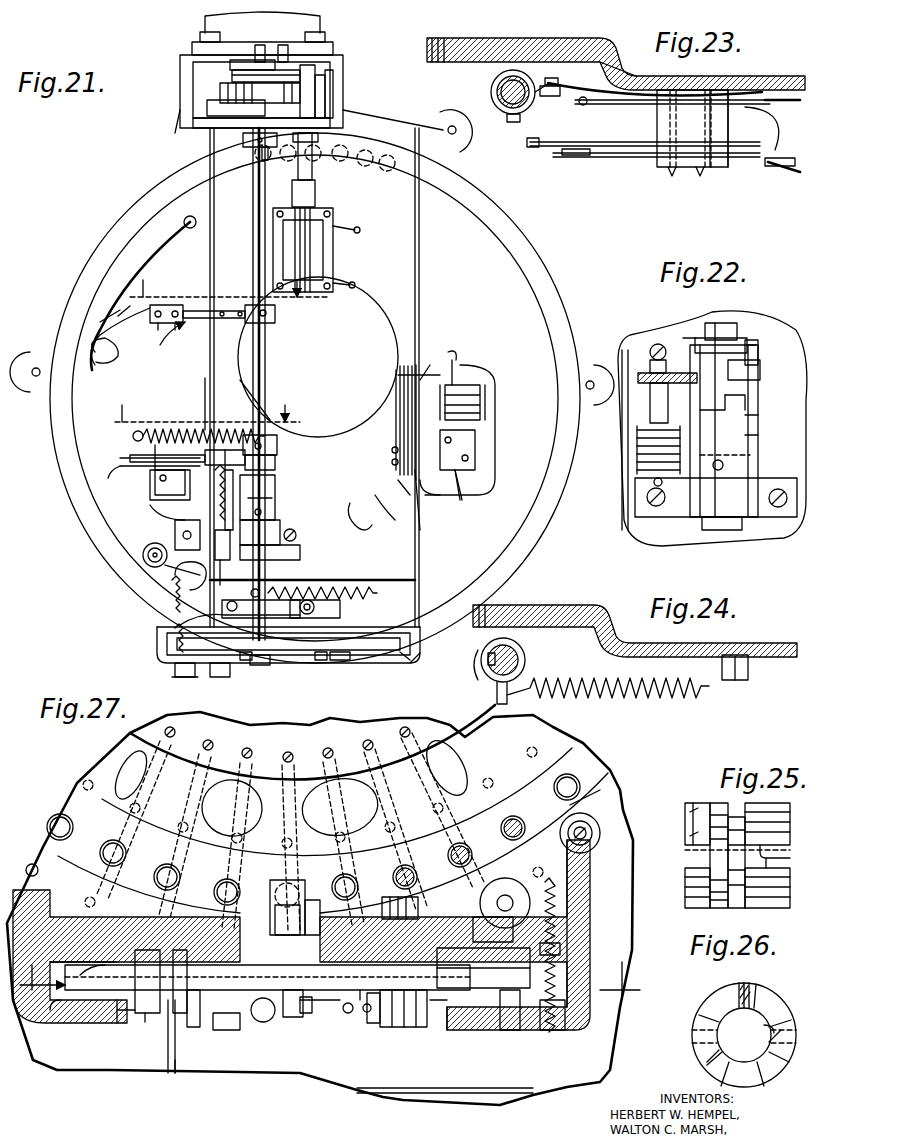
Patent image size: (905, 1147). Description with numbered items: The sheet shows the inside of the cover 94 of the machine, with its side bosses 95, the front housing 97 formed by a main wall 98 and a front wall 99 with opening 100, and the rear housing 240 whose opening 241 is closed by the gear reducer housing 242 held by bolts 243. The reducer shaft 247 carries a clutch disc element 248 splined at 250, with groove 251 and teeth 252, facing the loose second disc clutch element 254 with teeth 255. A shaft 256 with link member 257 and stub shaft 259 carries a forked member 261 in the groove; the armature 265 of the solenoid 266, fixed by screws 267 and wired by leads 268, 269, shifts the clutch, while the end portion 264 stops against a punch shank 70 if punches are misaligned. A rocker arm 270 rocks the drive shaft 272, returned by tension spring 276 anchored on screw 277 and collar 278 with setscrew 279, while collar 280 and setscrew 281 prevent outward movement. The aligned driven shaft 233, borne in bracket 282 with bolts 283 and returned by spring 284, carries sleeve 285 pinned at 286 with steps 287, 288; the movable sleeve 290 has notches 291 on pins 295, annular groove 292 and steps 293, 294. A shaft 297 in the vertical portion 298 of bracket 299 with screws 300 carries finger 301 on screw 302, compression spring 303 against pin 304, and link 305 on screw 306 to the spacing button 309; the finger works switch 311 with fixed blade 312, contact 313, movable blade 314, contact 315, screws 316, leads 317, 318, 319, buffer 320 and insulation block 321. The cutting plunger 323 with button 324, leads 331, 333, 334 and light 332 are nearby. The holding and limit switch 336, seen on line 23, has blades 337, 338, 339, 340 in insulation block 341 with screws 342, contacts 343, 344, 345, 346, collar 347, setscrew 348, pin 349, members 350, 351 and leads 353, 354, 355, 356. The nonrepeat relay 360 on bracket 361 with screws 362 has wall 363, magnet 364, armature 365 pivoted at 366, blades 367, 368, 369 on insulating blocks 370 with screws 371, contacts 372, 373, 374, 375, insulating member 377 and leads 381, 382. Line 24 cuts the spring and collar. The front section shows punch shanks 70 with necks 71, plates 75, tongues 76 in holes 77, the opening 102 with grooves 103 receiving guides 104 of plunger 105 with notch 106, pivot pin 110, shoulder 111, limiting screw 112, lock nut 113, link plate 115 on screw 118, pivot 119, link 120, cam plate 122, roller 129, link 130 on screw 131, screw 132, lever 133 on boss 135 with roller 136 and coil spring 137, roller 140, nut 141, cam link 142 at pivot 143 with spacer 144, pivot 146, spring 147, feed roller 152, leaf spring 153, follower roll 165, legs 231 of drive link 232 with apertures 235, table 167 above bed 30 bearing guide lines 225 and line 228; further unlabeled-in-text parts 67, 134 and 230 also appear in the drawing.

In FIG. 21, the section line 23- 23 is at (230, 294).
In FIG. 21, the section line 24- 24 is at (204, 410).
In FIG. 27, the bed 30 is at (78, 1105).
In FIG. 27, the rotary table 67 is at (160, 724).
In FIG. 21, the punch shank 70 is at (387, 156).
In FIG. 27, the punch shank 70 is at (50, 822).
In FIG. 27, the plunger-receiving neck 71 is at (460, 844).
In FIG. 27, the punch-supporting plate 75 is at (115, 762).
In FIG. 27, the tongue 76 is at (170, 726).
In FIG. 27, the hole 77 is at (207, 740).
In FIG. 21, the cover 94 is at (100, 222).
In FIG. 23, the cover 94 is at (762, 74).
In FIG. 22, the cover 94 is at (790, 540).
In FIG. 24, the cover 94 is at (580, 606).
In FIG. 27, the cover 94 is at (14, 885).
In FIG. 21, the bosses 95 is at (28, 355).
In FIG. 27, the housing 97 is at (590, 935).
In FIG. 21, the main wall 98 is at (418, 605).
In FIG. 27, the main wall 98 is at (60, 915).
In FIG. 21, the front wall 99 is at (420, 665).
In FIG. 27, the front wall 99 is at (85, 1023).
In FIG. 21, the opening 100 is at (405, 664).
In FIG. 27, the opening 100 is at (130, 1025).
In FIG. 27, the opening 102 is at (232, 875).
In FIG. 27, the vertical grooves 103 is at (170, 862).
In FIG. 27, the guides 104 is at (288, 920).
In FIG. 27, the punch actuating plunger 105 is at (345, 875).
In FIG. 27, the notch 106 is at (287, 900).
In FIG. 27, the pivot pin 110 is at (292, 1018).
In FIG. 27, the spacing shoulder 111 is at (317, 915).
In FIG. 21, the limiting screw 112 is at (258, 590).
In FIG. 21, the lock nut 113 is at (315, 607).
In FIG. 21, the link plate 115 is at (341, 612).
In FIG. 27, the link plate 115 is at (127, 914).
In FIG. 27, the screw 118 is at (180, 1014).
In FIG. 27, the pivot 119 is at (226, 1031).
In FIG. 27, the link 120 is at (365, 1013).
In FIG. 21, the combination link and cam plate 122 is at (180, 622).
In FIG. 27, the combination link and cam plate 122 is at (470, 988).
In FIG. 27, the roller 129 is at (508, 1031).
In FIG. 27, the link 130 is at (478, 920).
In FIG. 27, the screw 131 is at (550, 1031).
In FIG. 27, the screw 132 is at (562, 950).
In FIG. 21, the horizontal lever 133 is at (178, 580).
In FIG. 27, the cam 134 is at (485, 892).
In FIG. 27, the boss 135 is at (595, 818).
In FIG. 21, the roller 136 is at (145, 562).
In FIG. 21, the coil spring 137 is at (175, 640).
In FIG. 27, the coil spring 137 is at (565, 905).
In FIG. 27, the roller 140 is at (177, 1074).
In FIG. 27, the nut 141 is at (195, 1028).
In FIG. 27, the cam link 142 is at (112, 1024).
In FIG. 27, the pivot 143 is at (146, 1022).
In FIG. 21, the spacer member 144 is at (335, 661).
In FIG. 27, the spacer member 144 is at (135, 1000).
In FIG. 27, the pivot 146 is at (312, 1002).
In FIG. 27, the tension spring 147 is at (263, 1023).
In FIG. 27, the feed roller 152 is at (150, 980).
In FIG. 27, the leaf spring 153 is at (92, 970).
In FIG. 27, the follower roll 165 is at (346, 1014).
In FIG. 27, the table 167 is at (45, 1050).
In FIG. 27, the guide lines 225 is at (390, 1094).
In FIG. 27, the line 228 is at (168, 1070).
In FIG. 21, the bar 230 is at (292, 652).
In FIG. 21, the legs 231 is at (246, 661).
In FIG. 27, the legs 231 is at (362, 1002).
In FIG. 27, the drive link 232 is at (438, 1002).
In FIG. 22, the driven shaft 233 is at (715, 531).
In FIG. 27, the driven shaft 233 is at (400, 895).
In FIG. 27, the apertures 235 is at (374, 1024).
In FIG. 21, the second housing 240 is at (178, 60).
In FIG. 21, the housing opening 241 is at (334, 50).
In FIG. 21, the gear reducer housing 242 is at (322, 20).
In FIG. 21, the bolts 243 is at (326, 38).
In FIG. 21, the shaft 247 is at (262, 46).
In FIG. 21, the clutch disc element 248 is at (230, 64).
In FIG. 21, the spline 250 is at (232, 80).
In FIG. 21, the circumferential groove 251 is at (232, 75).
In FIG. 21, the teeth 252 is at (326, 88).
In FIG. 21, the second disc clutch element 254 is at (207, 105).
In FIG. 21, the teeth 255 is at (260, 93).
In FIG. 21, the shaft 256 is at (313, 172).
In FIG. 21, the link member 257 is at (316, 75).
In FIG. 21, the stub shaft 259 is at (334, 105).
In FIG. 21, the forked member 261 is at (283, 46).
In FIG. 21, the end portion 264 is at (319, 138).
In FIG. 21, the armature 265 is at (316, 195).
In FIG. 21, the solenoid 266 is at (340, 248).
In FIG. 21, the screws 267 is at (276, 214).
In FIG. 21, the electrical lead 268 is at (360, 230).
In FIG. 21, the electrical lead 269 is at (356, 285).
In FIG. 21, the rocker arm 270 is at (193, 122).
In FIG. 21, the drive shaft 272 is at (266, 355).
In FIG. 23, the drive shaft 272 is at (505, 80).
In FIG. 22, the drive shaft 272 is at (740, 330).
In FIG. 24, the drive shaft 272 is at (515, 654).
In FIG. 21, the tension spring 276 is at (185, 430).
In FIG. 24, the tension spring 276 is at (690, 682).
In FIG. 21, the screw 277 is at (132, 438).
In FIG. 24, the screw 277 is at (745, 680).
In FIG. 21, the collar 278 is at (278, 448).
In FIG. 22, the collar 278 is at (722, 336).
In FIG. 24, the collar 278 is at (527, 662).
In FIG. 21, the setscrew 279 is at (262, 446).
In FIG. 24, the setscrew 279 is at (486, 658).
In FIG. 21, the collar 280 is at (245, 146).
In FIG. 21, the setscrew 281 is at (262, 155).
In FIG. 21, the bracket 282 is at (301, 552).
In FIG. 22, the bracket 282 is at (690, 518).
In FIG. 21, the bolts 283 is at (297, 535).
In FIG. 22, the bolts 283 is at (640, 510).
In FIG. 21, the tension spring 284 is at (332, 590).
In FIG. 21, the sleeve 285 is at (281, 525).
In FIG. 22, the sleeve 285 is at (756, 470).
In FIG. 21, the pin 286 is at (262, 510).
In FIG. 22, the pin 286 is at (718, 470).
In FIG. 22, the step 287 is at (722, 412).
In FIG. 22, the step 288 is at (758, 416).
In FIG. 21, the sleeve 290 is at (276, 485).
In FIG. 22, the sleeve 290 is at (760, 375).
In FIG. 25, the sleeve 290 is at (719, 802).
In FIG. 26, the sleeve 290 is at (701, 1008).
In FIG. 22, the notches 291 is at (706, 332).
In FIG. 25, the notches 291 is at (745, 862).
In FIG. 26, the notches 291 is at (764, 1027).
In FIG. 22, the annular groove 292 is at (760, 355).
In FIG. 25, the annular groove 292 is at (738, 816).
In FIG. 22, the step 293 is at (758, 436).
In FIG. 25, the step 293 is at (685, 820).
In FIG. 26, the step 293 is at (761, 998).
In FIG. 22, the step 294 is at (746, 402).
In FIG. 25, the step 294 is at (700, 804).
In FIG. 26, the step 294 is at (743, 990).
In FIG. 22, the pins 295 is at (685, 340).
In FIG. 21, the shaft 297 is at (180, 570).
In FIG. 22, the shaft 297 is at (648, 502).
In FIG. 22, the vertical portion 298 is at (638, 450).
In FIG. 21, the bracket 299 is at (272, 420).
In FIG. 22, the bracket 299 is at (622, 420).
In FIG. 22, the screws 300 is at (656, 346).
In FIG. 21, the finger 301 is at (294, 497).
In FIG. 22, the finger 301 is at (640, 376).
In FIG. 22, the screw 302 is at (650, 364).
In FIG. 21, the compression spring 303 is at (248, 504).
In FIG. 22, the compression spring 303 is at (652, 420).
In FIG. 21, the pin 304 is at (232, 548).
In FIG. 22, the pin 304 is at (654, 483).
In FIG. 21, the link 305 is at (232, 560).
In FIG. 21, the screw 306 is at (312, 599).
In FIG. 21, the spacing operation button 309 is at (258, 667).
In FIG. 21, the switch 311 is at (148, 480).
In FIG. 21, the fixed blade 312 is at (205, 450).
In FIG. 21, the contact 313 is at (226, 450).
In FIG. 21, the movable blade 314 is at (150, 454).
In FIG. 21, the contact 315 is at (276, 462).
In FIG. 21, the screws 316 is at (160, 494).
In FIG. 21, the lead 317 is at (120, 460).
In FIG. 21, the lead 318 is at (118, 468).
In FIG. 21, the lead 319 is at (175, 528).
In FIG. 21, the buffer 320 is at (204, 400).
In FIG. 21, the insulation block 321 is at (156, 470).
In FIG. 21, the cutting operating plunger 323 is at (174, 670).
In FIG. 21, the cutting operation button 324 is at (172, 678).
In FIG. 21, the lead 331 is at (148, 555).
In FIG. 21, the light 332 is at (213, 678).
In FIG. 21, the lead 333 is at (220, 490).
In FIG. 21, the lead 334 is at (172, 594).
In FIG. 21, the holding and limit switch 336 is at (165, 344).
In FIG. 23, the holding and limit switch 336 is at (613, 196).
In FIG. 23, the switch blade 337 is at (630, 88).
In FIG. 23, the switch blade 338 is at (645, 104).
In FIG. 21, the switch blade 339 is at (240, 318).
In FIG. 23, the switch blade 339 is at (648, 141).
In FIG. 21, the switch blade 340 is at (196, 311).
In FIG. 23, the switch blade 340 is at (660, 168).
In FIG. 21, the insulation block 341 is at (166, 305).
In FIG. 23, the insulation block 341 is at (724, 168).
In FIG. 21, the screws 342 is at (165, 325).
In FIG. 23, the screws 342 is at (700, 175).
In FIG. 23, the contact 343 is at (552, 98).
In FIG. 23, the contact 344 is at (584, 106).
In FIG. 23, the contact 345 is at (620, 158).
In FIG. 21, the contact 346 is at (223, 311).
In FIG. 23, the contact 346 is at (570, 157).
In FIG. 21, the collar 347 is at (270, 325).
In FIG. 23, the collar 347 is at (492, 88).
In FIG. 21, the setscrew 348 is at (276, 313).
In FIG. 23, the setscrew 348 is at (512, 123).
In FIG. 23, the pin 349 is at (542, 84).
In FIG. 23, the member 350 is at (553, 78).
In FIG. 23, the member 351 is at (532, 148).
In FIG. 21, the lead 353 is at (104, 328).
In FIG. 23, the lead 353 is at (782, 96).
In FIG. 21, the lead 354 is at (127, 320).
In FIG. 23, the lead 354 is at (777, 126).
In FIG. 21, the lead 355 is at (98, 306).
In FIG. 23, the lead 355 is at (786, 174).
In FIG. 21, the lead 356 is at (106, 344).
In FIG. 23, the lead 356 is at (789, 156).
In FIG. 21, the nonrepeat relay 360 is at (492, 420).
In FIG. 21, the bracket 361 is at (457, 478).
In FIG. 21, the screws 362 is at (452, 441).
In FIG. 21, the wall 363 is at (483, 395).
In FIG. 21, the electrical magnet 364 is at (462, 382).
In FIG. 21, the armature 365 is at (455, 378).
In FIG. 21, the pivotal support 366 is at (478, 440).
In FIG. 21, the switch blade 367 is at (406, 402).
In FIG. 21, the switch blade 368 is at (410, 412).
In FIG. 21, the switch blade 369 is at (395, 424).
In FIG. 21, the insulating blocks 370 is at (398, 482).
In FIG. 21, the screws 371 is at (391, 452).
In FIG. 21, the contact 372 is at (402, 388).
In FIG. 21, the contact 373 is at (417, 372).
In FIG. 21, the contact 374 is at (398, 378).
In FIG. 21, the contact 375 is at (404, 372).
In FIG. 21, the insulating member 377 is at (430, 368).
In FIG. 21, the lead 381 is at (458, 358).
In FIG. 21, the lead 382 is at (482, 494).